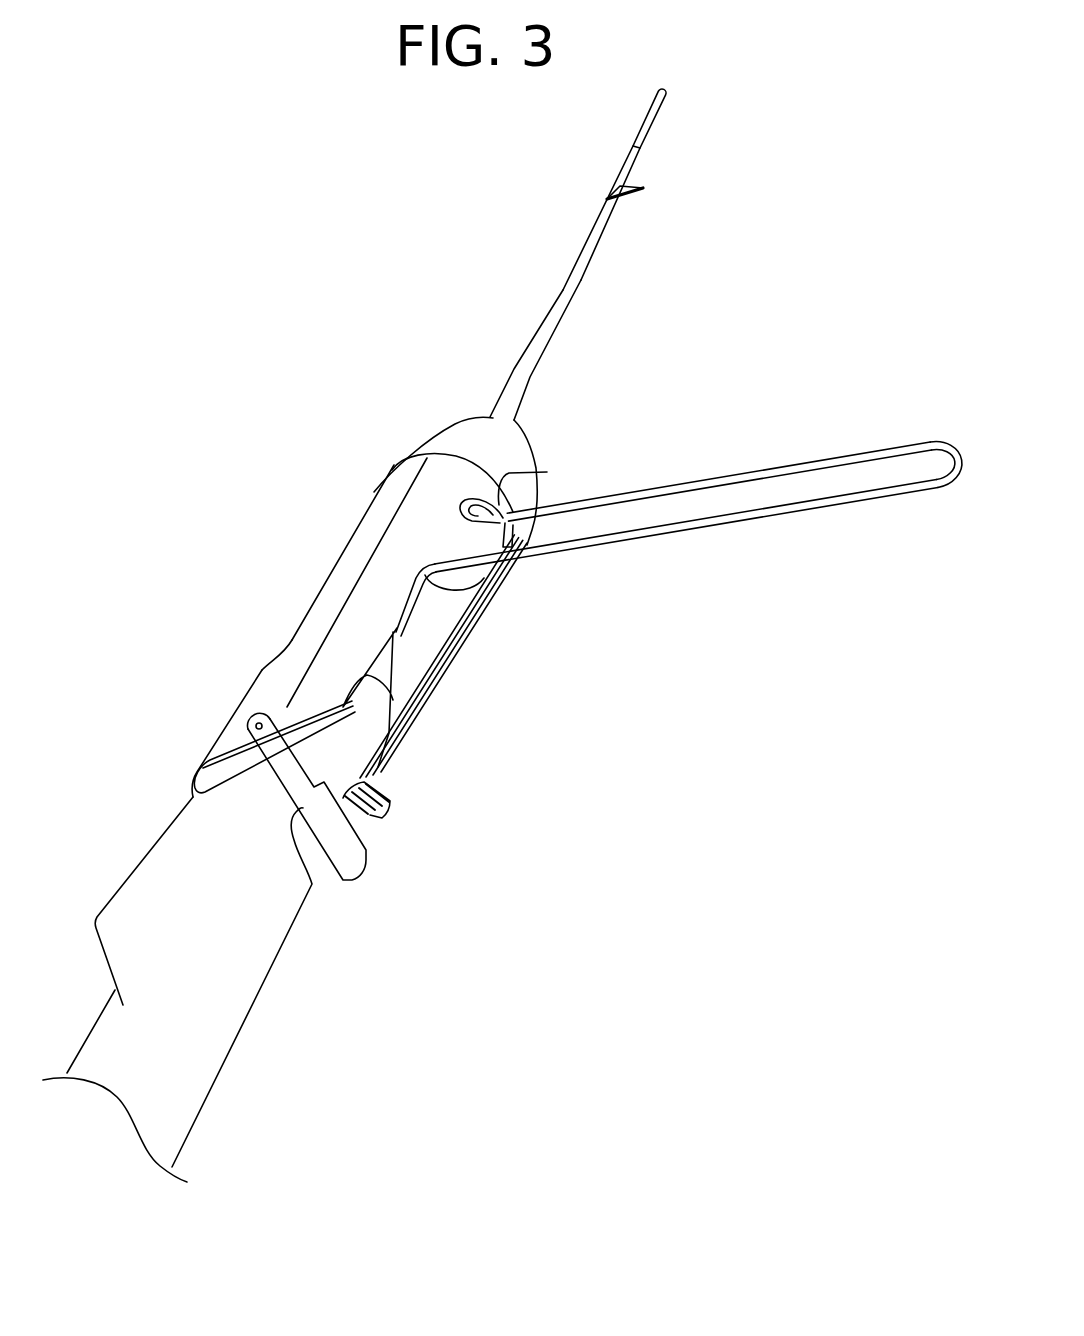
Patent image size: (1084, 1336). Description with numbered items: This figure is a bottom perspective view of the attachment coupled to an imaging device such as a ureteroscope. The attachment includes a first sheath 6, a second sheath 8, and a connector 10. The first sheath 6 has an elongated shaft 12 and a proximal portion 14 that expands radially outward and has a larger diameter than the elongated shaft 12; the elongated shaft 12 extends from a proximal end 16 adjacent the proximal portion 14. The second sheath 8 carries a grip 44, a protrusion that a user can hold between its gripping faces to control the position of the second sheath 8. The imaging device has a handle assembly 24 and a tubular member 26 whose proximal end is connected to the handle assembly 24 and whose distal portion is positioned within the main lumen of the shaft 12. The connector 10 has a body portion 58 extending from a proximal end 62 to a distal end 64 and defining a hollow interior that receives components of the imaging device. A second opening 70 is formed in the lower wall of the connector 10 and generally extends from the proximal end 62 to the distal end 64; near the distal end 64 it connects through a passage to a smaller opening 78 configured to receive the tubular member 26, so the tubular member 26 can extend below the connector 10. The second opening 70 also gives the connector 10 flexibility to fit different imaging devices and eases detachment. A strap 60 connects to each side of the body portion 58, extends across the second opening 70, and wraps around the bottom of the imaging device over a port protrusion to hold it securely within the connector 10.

The first sheath 6 is at (516, 366).
The second sheath 8 is at (653, 124).
The connector 10 is at (382, 500).
The elongated shaft 12 is at (584, 263).
The proximal portion 14 is at (458, 420).
The proximal end 16 is at (519, 424).
The handle assembly 24 is at (187, 1077).
The tubular member 26 is at (812, 462).
The grip 44 is at (645, 188).
The body portion 58 is at (272, 680).
The strap 60 is at (294, 781).
The proximal end 62 is at (213, 757).
The distal end 64 is at (422, 452).
The second opening 70 is at (450, 606).
The smaller opening 78 is at (519, 474).